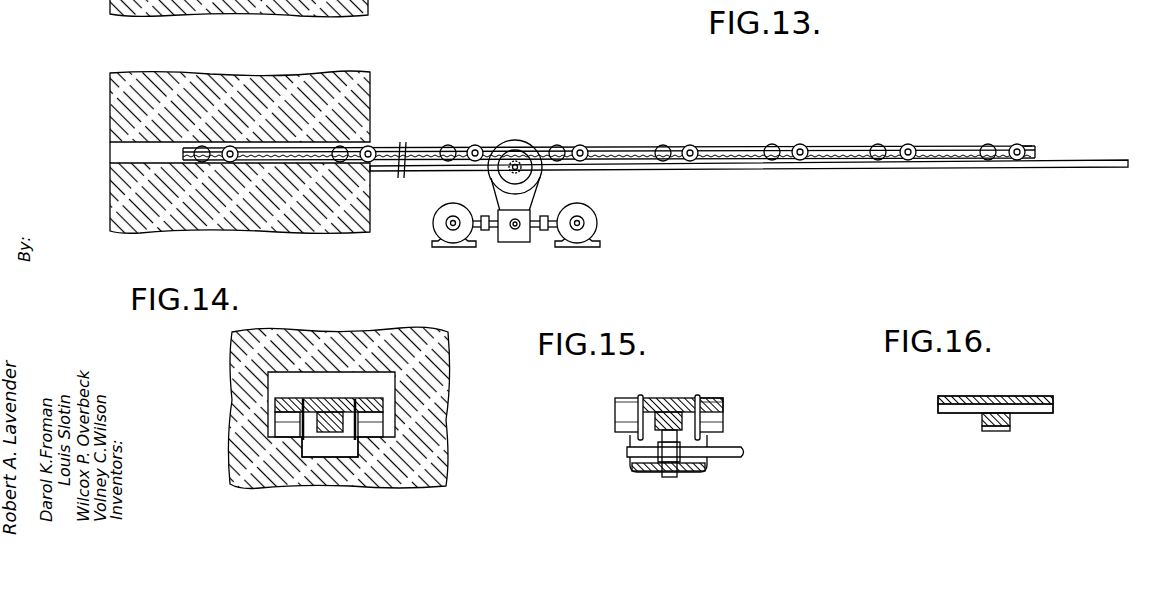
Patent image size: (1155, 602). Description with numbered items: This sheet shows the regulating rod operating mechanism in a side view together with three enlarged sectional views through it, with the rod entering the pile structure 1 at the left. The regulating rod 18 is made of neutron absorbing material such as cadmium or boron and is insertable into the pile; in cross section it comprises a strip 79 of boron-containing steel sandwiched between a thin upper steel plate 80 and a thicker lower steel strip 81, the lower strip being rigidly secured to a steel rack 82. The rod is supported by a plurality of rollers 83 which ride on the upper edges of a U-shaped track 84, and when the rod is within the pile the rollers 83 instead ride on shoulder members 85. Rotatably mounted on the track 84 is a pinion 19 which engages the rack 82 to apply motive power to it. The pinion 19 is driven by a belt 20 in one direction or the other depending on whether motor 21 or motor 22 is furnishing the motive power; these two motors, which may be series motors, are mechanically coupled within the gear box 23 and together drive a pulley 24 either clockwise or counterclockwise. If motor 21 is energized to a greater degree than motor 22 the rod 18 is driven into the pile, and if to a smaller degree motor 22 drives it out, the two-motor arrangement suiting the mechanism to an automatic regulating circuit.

In FIG. 13, the housing block 1 is at (112, 93).
In FIG. 13, the regulating rod 18 is at (640, 133).
In FIG. 15, the regulating rod 18 is at (723, 396).
In FIG. 13, the pinion 19 is at (506, 170).
In FIG. 15, the pinion 19 is at (672, 479).
In FIG. 13, the belt 20 is at (537, 183).
In FIG. 13, the motor 21 is at (434, 215).
In FIG. 13, the motor 22 is at (599, 219).
In FIG. 13, the gear box 23 is at (508, 240).
In FIG. 13, the pulley 24 is at (522, 240).
In FIG. 16, the strip 79 is at (1054, 403).
In FIG. 16, the upper steel plate 80 is at (1036, 396).
In FIG. 16, the lower steel strip 81 is at (1044, 415).
In FIG. 13, the rack 82 is at (739, 160).
In FIG. 15, the rack 82 is at (681, 398).
In FIG. 16, the rack 82 is at (982, 422).
In FIG. 13, the rollers 83 is at (803, 147).
In FIG. 14, the rollers 83 is at (276, 421).
In FIG. 15, the rollers 83 is at (725, 421).
In FIG. 13, the U-shaped track 84 is at (654, 166).
In FIG. 15, the U-shaped track 84 is at (712, 450).
In FIG. 14, the shoulder members 85 is at (300, 446).